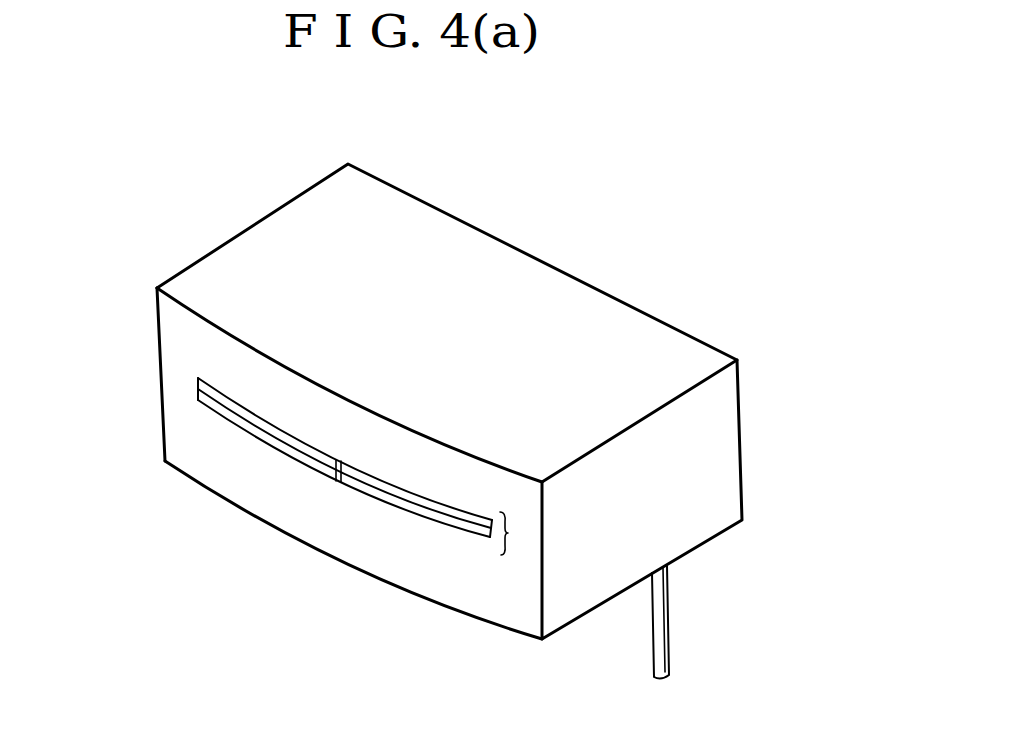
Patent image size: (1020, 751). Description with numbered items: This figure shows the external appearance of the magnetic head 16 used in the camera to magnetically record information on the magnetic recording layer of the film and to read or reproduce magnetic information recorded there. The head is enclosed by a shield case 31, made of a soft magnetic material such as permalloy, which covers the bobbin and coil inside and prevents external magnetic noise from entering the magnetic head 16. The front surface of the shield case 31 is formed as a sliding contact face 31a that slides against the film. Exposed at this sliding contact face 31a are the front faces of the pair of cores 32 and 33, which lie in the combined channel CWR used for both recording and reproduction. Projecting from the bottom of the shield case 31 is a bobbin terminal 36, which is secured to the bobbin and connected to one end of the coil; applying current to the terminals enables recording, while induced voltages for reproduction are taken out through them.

The magnetic head 16 is at (614, 190).
The shield case 31 is at (630, 321).
The sliding contact face 31a is at (243, 485).
The core 32 is at (408, 510).
The core 33 is at (197, 384).
The bobbin terminal 36 is at (663, 625).
The combined channel for recording and reproduction CWR is at (508, 533).